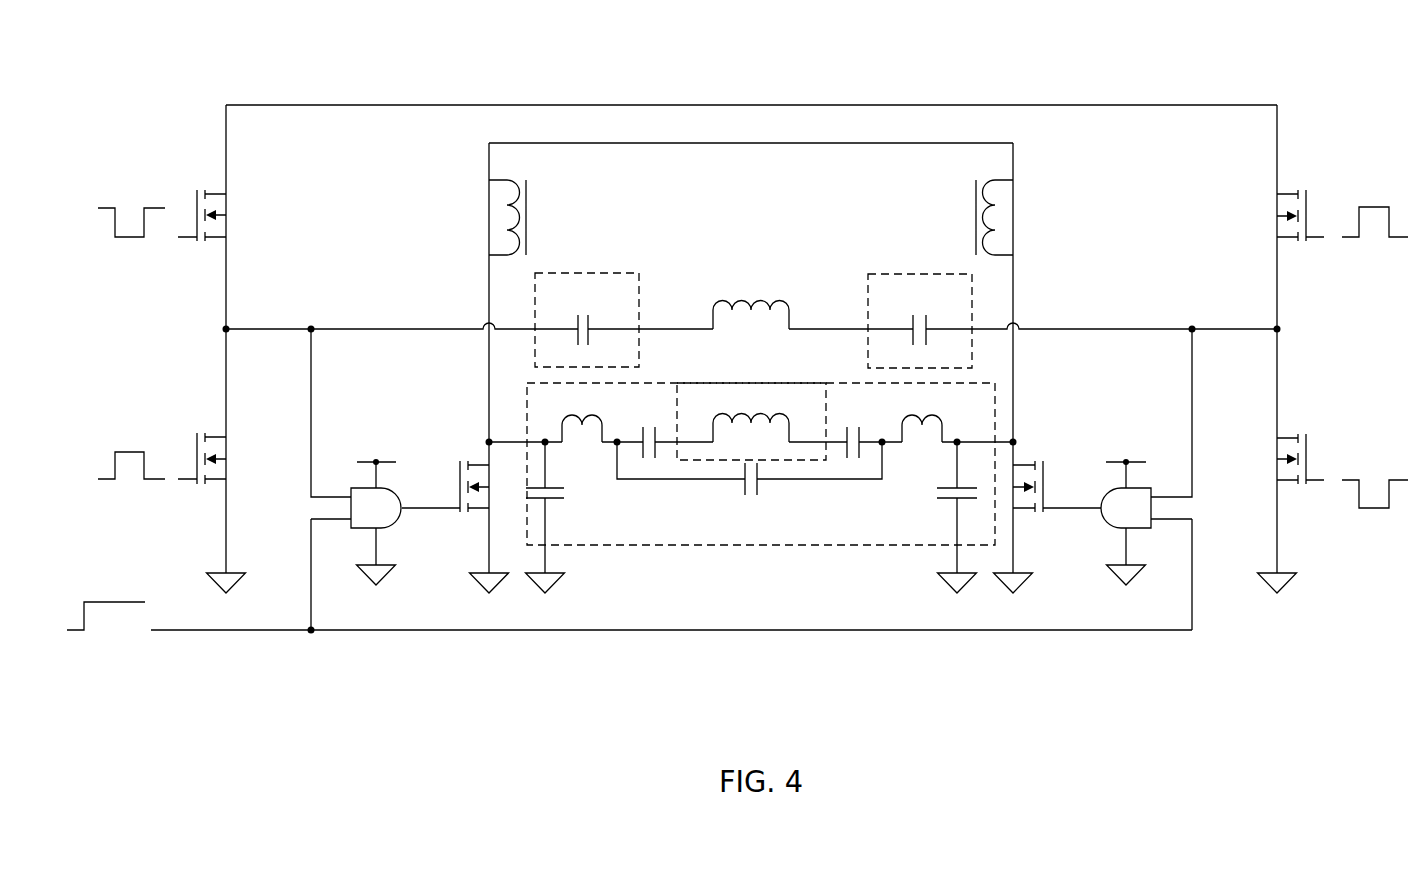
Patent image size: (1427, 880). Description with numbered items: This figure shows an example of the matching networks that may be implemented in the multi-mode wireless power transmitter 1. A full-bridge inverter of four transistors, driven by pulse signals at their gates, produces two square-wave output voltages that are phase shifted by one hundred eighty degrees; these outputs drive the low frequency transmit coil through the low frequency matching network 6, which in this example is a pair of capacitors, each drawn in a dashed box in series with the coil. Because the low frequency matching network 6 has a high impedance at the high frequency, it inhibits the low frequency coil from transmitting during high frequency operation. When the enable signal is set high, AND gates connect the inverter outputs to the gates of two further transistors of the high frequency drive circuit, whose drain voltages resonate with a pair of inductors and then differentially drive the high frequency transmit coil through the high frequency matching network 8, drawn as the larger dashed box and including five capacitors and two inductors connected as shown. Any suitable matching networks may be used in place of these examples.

The multi-mode wireless power transmitter 1 is at (196, 66).
The low frequency matching network 6 is at (613, 274).
The high frequency matching network 8 is at (699, 525).